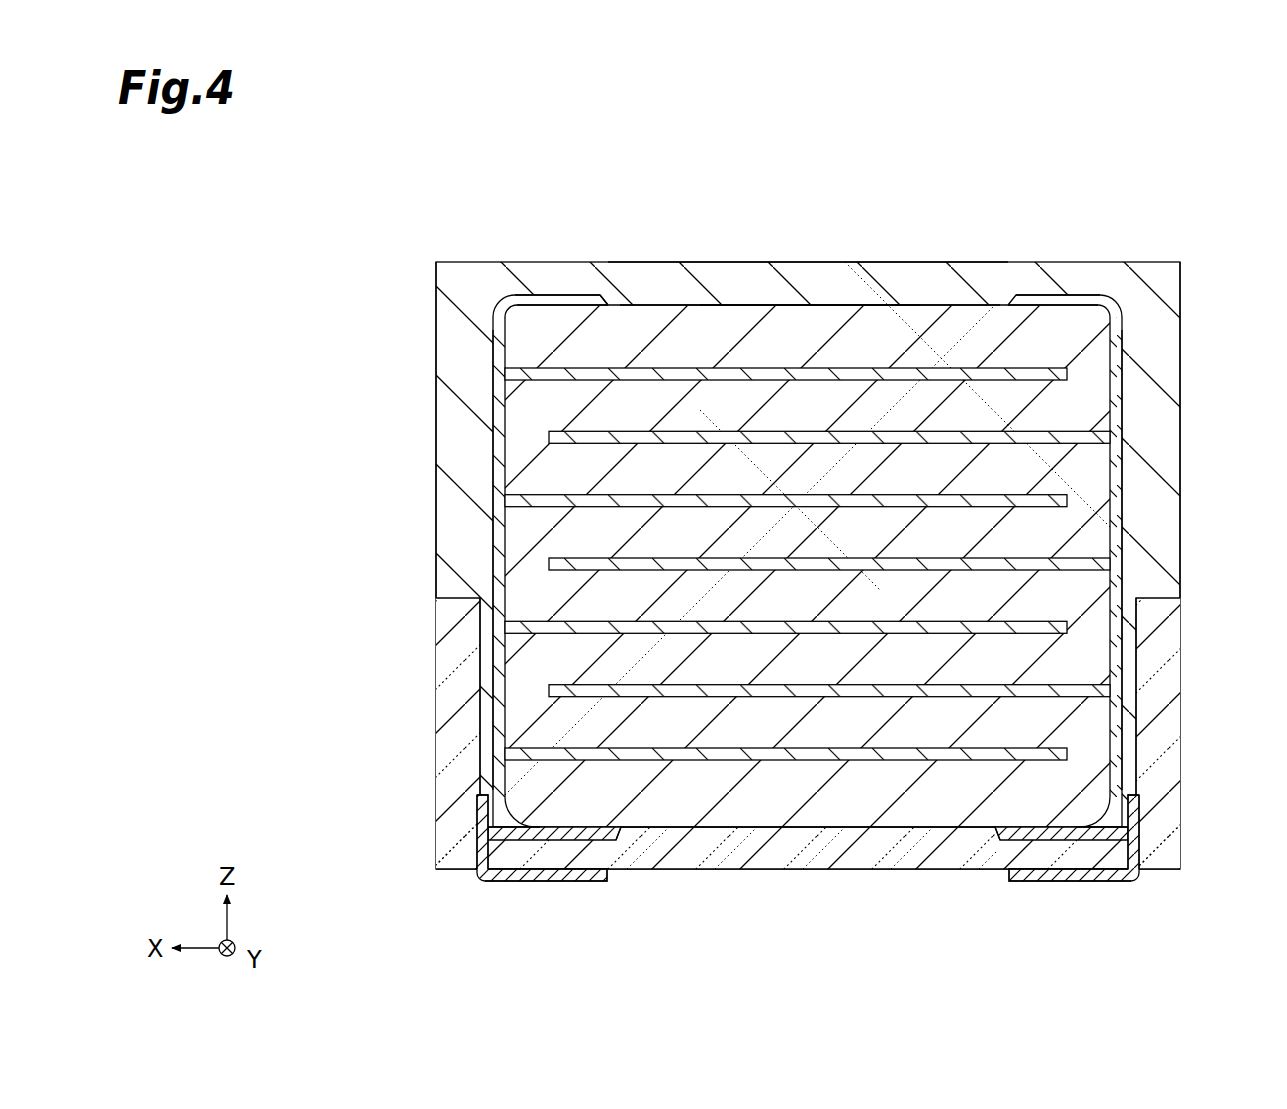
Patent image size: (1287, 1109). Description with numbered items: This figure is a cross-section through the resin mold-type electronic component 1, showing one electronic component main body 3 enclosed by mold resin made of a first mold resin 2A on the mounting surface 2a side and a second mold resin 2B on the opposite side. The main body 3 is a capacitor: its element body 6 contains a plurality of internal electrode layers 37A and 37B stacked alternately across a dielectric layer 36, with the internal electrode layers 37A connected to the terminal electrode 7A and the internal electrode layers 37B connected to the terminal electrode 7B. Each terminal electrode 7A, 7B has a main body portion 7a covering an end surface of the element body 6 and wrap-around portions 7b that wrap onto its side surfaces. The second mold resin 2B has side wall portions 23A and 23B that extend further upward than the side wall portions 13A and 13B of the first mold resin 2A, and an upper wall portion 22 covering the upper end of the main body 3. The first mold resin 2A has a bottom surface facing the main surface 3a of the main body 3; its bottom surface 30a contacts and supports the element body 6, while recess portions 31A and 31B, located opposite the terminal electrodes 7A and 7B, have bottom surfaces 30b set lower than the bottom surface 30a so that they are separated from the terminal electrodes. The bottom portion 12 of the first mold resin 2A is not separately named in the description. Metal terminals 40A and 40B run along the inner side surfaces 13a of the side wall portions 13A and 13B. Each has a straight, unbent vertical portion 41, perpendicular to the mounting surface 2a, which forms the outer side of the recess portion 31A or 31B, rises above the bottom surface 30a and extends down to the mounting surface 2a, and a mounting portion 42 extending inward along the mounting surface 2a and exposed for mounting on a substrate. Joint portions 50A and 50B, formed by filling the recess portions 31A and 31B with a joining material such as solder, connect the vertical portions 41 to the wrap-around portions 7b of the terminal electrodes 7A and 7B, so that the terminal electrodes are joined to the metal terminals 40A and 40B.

The resin mold-type electronic component 1 is at (350, 213).
The first mold resin 2A is at (1182, 640).
The second mold resin 2B is at (1182, 326).
The mounting surface 2a is at (856, 872).
The electronic component main body 3 is at (690, 296).
The main surface 3a is at (790, 827).
The element body 6 is at (805, 296).
The terminal electrode 7A is at (578, 296).
The terminal electrode 7B is at (1080, 296).
The main body portion 7a is at (492, 490).
The wrap-around portion 7b is at (545, 296).
The bottom wall 12 is at (910, 852).
The side wall portion 13A is at (448, 720).
The side wall portion 13B is at (1160, 718).
The side surface 13a is at (486, 665).
The upper wall portion 22 is at (983, 277).
The side wall portion 23A is at (455, 412).
The side wall portion 23B is at (1163, 432).
The bottom surface 30a is at (790, 842).
The bottom surface 30b is at (562, 882).
The recess portion 31A is at (517, 832).
The recess portion 31B is at (1100, 833).
The dielectric layer 36 is at (748, 306).
The internal electrode layer 37A is at (786, 479).
The internal electrode layer 37B is at (829, 447).
The metal terminal 40A is at (599, 884).
The metal terminal 40B is at (1027, 884).
The vertical portion 41 is at (477, 826).
The mounting portion 42 is at (512, 882).
The joint portion 50A is at (633, 842).
The joint portion 50B is at (983, 842).